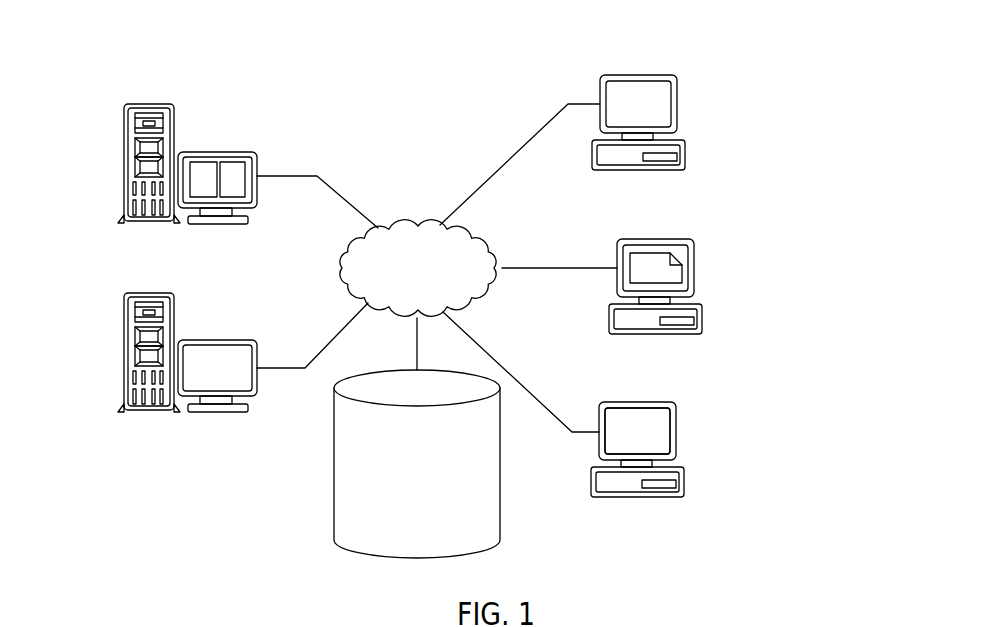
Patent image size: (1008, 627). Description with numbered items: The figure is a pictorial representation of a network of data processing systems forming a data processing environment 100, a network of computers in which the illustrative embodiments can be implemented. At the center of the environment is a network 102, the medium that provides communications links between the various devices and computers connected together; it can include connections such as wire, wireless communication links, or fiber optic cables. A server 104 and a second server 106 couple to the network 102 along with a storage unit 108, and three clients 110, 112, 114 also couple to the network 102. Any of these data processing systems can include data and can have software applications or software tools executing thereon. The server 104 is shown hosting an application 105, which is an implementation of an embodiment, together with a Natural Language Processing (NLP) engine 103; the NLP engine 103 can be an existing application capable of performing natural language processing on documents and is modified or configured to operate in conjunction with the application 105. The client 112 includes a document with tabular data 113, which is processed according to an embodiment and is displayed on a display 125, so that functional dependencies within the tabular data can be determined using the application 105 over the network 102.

The data processing environment 100 is at (291, 47).
The network 102 is at (428, 222).
The Natural Language Processing (NLP) engine 103 is at (203, 172).
The server 104 is at (123, 183).
The application 105 is at (240, 180).
The server 106 is at (123, 370).
The storage unit 108 is at (500, 512).
The client 110 is at (685, 155).
The client 112 is at (702, 318).
The document with tabular data 113 is at (680, 271).
The client 114 is at (683, 476).
The display 125 is at (657, 437).